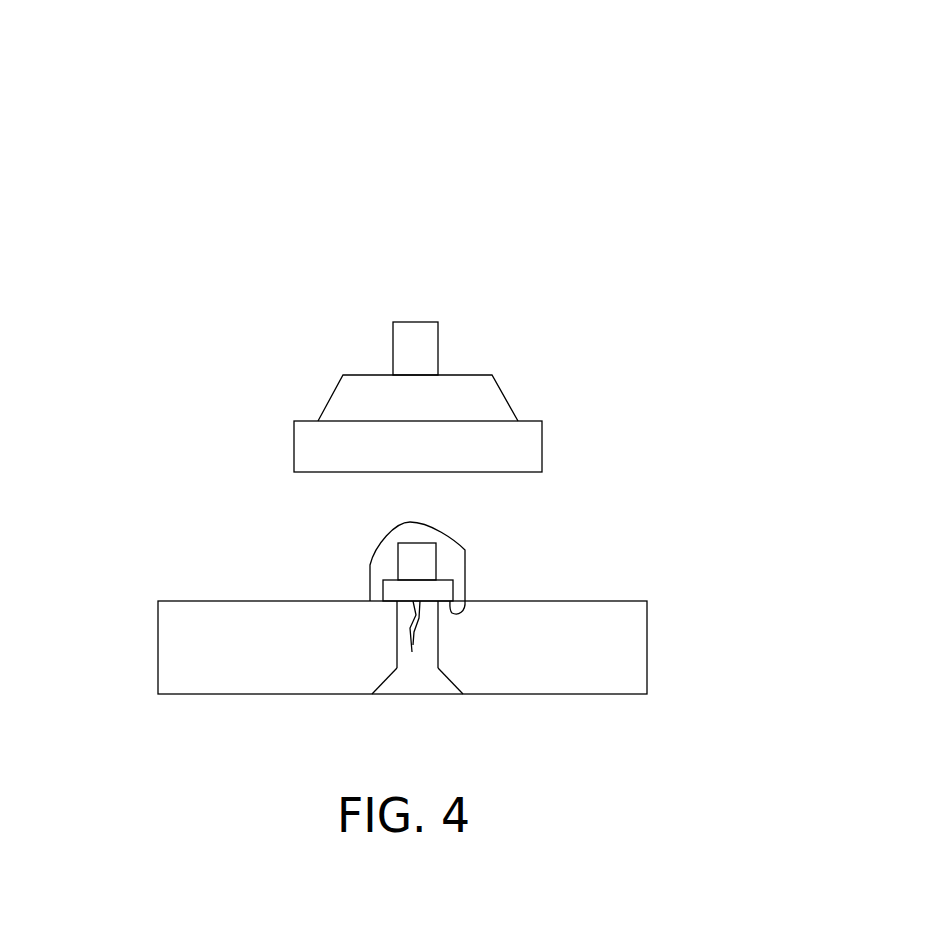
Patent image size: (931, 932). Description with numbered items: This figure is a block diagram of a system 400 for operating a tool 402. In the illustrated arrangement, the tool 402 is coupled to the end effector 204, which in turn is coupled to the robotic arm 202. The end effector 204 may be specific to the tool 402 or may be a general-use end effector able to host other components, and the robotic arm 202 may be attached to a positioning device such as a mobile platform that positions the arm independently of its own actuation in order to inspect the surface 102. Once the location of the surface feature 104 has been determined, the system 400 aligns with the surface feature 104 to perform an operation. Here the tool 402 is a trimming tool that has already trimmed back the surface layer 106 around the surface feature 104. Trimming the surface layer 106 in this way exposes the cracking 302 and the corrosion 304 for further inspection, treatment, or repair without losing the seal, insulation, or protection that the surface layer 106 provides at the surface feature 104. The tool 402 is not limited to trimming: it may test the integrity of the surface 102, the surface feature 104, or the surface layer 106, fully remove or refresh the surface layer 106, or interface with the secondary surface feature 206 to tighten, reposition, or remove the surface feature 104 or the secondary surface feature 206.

The system 400 is at (168, 92).
The tool 402 is at (438, 456).
The end effector 204 is at (510, 400).
The robotic arm 202 is at (439, 347).
The surface 102 is at (205, 600).
The secondary surface feature 206 is at (383, 592).
The surface feature 104 is at (437, 562).
The surface layer 106 is at (380, 540).
The corrosion 304 is at (470, 605).
The cracking 302 is at (403, 622).